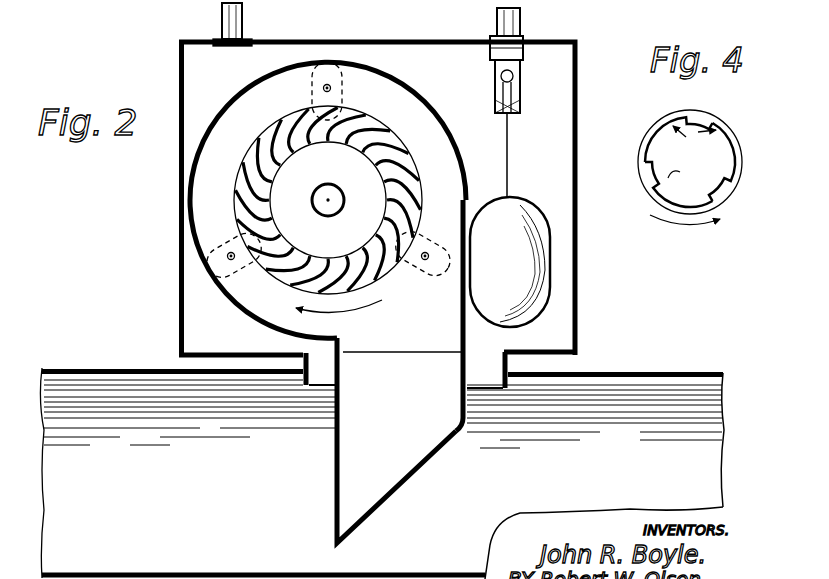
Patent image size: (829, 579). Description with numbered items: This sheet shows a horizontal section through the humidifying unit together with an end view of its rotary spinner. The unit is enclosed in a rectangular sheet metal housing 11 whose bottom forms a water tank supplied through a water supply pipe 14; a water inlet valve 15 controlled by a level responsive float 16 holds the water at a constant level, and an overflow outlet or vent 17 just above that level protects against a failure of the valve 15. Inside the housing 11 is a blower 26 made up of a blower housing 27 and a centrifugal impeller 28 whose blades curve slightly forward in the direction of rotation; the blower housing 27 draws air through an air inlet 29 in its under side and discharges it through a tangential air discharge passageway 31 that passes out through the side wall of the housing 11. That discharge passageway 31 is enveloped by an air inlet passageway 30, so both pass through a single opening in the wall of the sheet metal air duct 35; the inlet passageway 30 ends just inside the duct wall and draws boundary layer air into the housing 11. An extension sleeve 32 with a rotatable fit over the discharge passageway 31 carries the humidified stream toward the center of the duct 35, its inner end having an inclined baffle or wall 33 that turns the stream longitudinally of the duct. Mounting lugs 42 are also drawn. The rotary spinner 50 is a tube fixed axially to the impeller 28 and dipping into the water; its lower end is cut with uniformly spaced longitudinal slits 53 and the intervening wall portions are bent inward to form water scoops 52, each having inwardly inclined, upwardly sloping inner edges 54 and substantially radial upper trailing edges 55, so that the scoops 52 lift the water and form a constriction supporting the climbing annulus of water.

In FIG. 2, the sheet metal housing 11 is at (177, 207).
In FIG. 2, the water supply pipe 14 is at (500, 22).
In FIG. 2, the water inlet valve 15 is at (495, 75).
In FIG. 2, the level responsive float 16 is at (540, 278).
In FIG. 2, the overflow outlet or vent 17 is at (222, 15).
In FIG. 2, the blower 26 is at (239, 98).
In FIG. 2, the blower housing 27 is at (223, 280).
In FIG. 2, the centrifugal impeller 28 is at (395, 146).
In FIG. 2, the air inlet 29 is at (340, 249).
In FIG. 2, the air inlet passageway 30 is at (501, 380).
In FIG. 2, the tangential air discharge passageway 31 is at (298, 374).
In FIG. 2, the extension sleeve 32 is at (462, 398).
In FIG. 2, the inclined baffle or wall 33 is at (410, 477).
In FIG. 2, the sheet metal air duct 35 is at (103, 368).
In FIG. 2, the mounting lug 42 is at (312, 78).
In FIG. 2, the rotary spinner 50 is at (334, 184).
In FIG. 4, the rotary spinner 50 is at (655, 110).
In FIG. 4, the water scoops 52 is at (648, 194).
In FIG. 4, the longitudinal slits 53 is at (738, 136).
In FIG. 4, the inner edges 54 is at (694, 141).
In FIG. 4, the upper trailing edges 55 is at (681, 177).